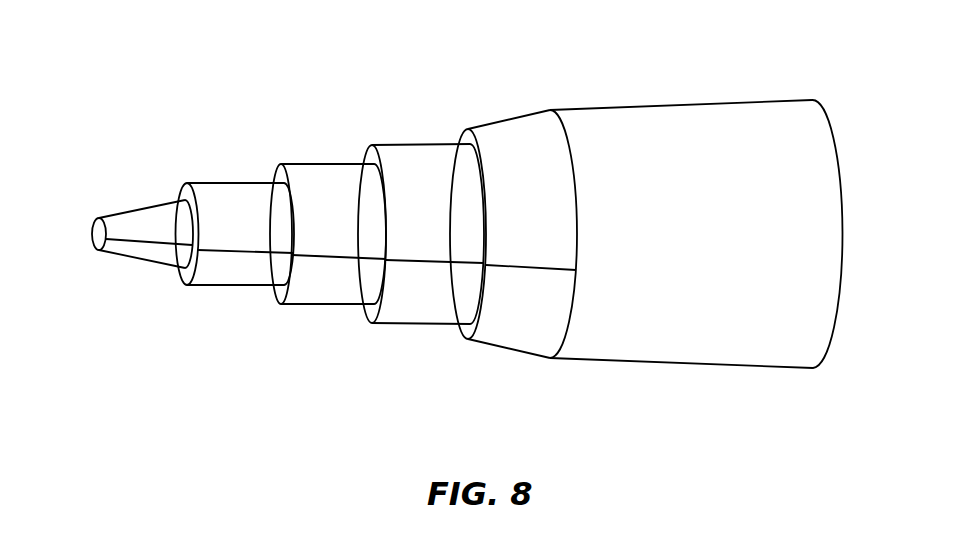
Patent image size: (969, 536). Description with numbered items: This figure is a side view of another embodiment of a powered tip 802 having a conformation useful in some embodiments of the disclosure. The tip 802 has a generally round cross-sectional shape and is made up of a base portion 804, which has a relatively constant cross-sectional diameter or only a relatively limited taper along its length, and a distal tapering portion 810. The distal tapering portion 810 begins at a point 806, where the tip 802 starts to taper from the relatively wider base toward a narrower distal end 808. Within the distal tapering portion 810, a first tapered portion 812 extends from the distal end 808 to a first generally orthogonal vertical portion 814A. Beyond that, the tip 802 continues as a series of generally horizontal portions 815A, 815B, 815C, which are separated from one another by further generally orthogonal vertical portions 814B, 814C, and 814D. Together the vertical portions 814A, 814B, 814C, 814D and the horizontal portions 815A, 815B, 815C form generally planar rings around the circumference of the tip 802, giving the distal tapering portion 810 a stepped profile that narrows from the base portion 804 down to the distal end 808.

The tip 802 is at (698, 383).
The base portion 804 is at (695, 173).
The point 806 is at (573, 197).
The distal end 808 is at (98, 249).
The distal tapering portion 810 is at (472, 377).
The first tapered portion 812 is at (150, 218).
The first generally orthogonal vertical portion 814A is at (185, 273).
The generally orthogonal vertical portion 814B is at (277, 292).
The generally orthogonal vertical portion 814C is at (368, 315).
The generally orthogonal vertical portion 814D is at (460, 333).
The generally horizontal portion 815A is at (237, 198).
The generally horizontal portion 815B is at (325, 178).
The generally horizontal portion 815C is at (418, 168).